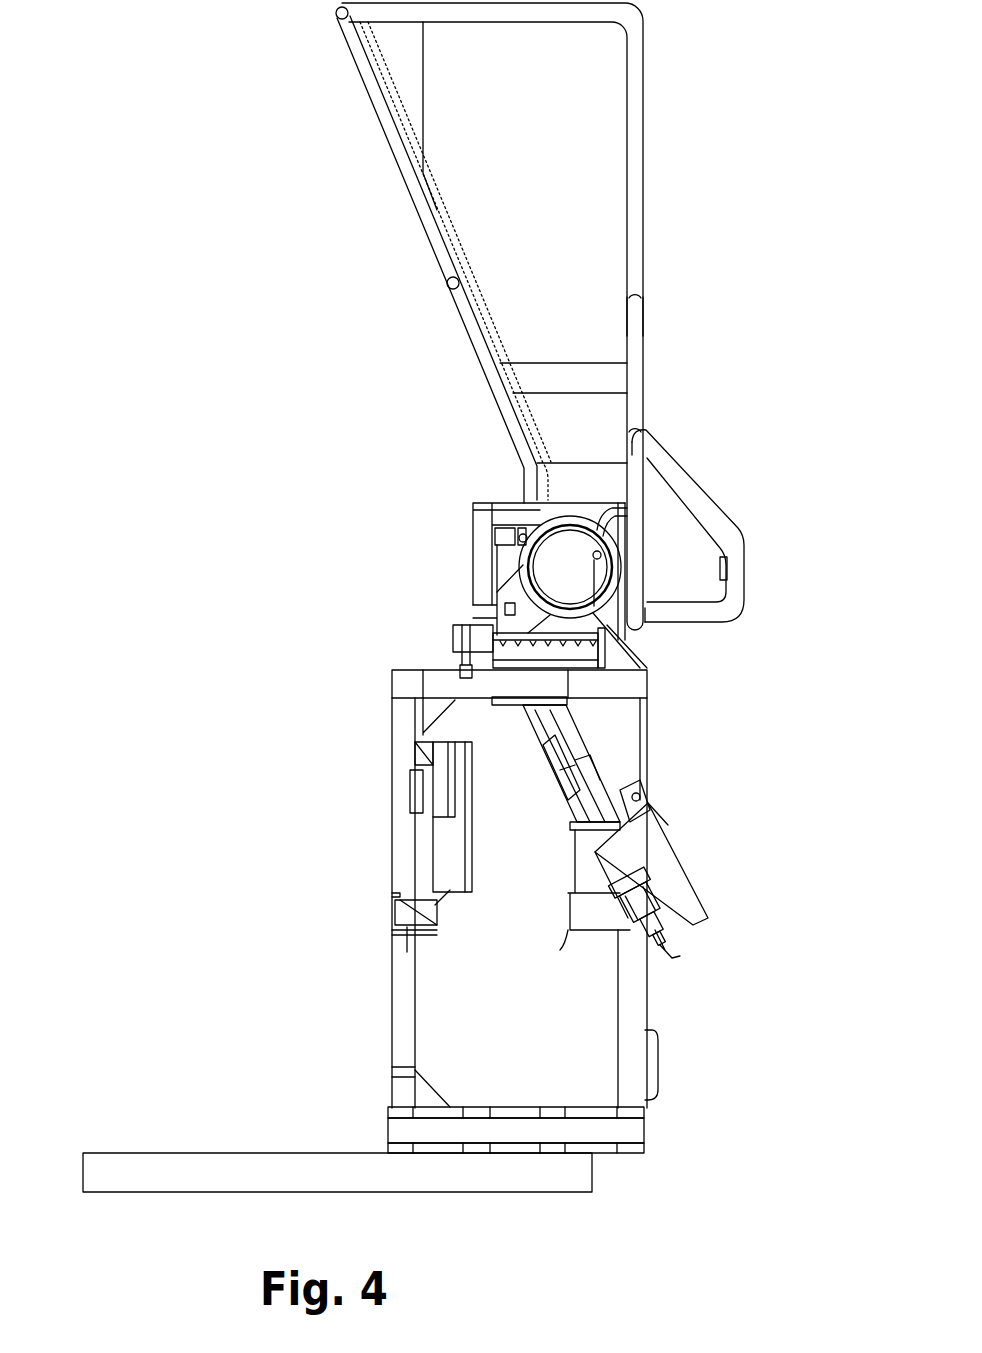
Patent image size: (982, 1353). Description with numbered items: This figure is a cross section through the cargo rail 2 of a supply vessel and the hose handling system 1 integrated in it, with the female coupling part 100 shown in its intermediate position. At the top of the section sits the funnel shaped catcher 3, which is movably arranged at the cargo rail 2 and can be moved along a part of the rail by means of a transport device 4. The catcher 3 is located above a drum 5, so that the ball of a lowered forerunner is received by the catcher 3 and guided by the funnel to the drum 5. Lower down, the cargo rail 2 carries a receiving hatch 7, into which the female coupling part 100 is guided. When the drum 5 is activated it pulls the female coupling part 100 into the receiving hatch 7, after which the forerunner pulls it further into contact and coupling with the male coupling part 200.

The hose handling system 1 is at (250, 529).
The cargo rail 2 is at (340, 989).
The funnel shaped catcher 3 is at (526, 198).
The transport device 4 is at (498, 567).
The drum 5 is at (570, 557).
The receiving hatch 7 is at (697, 822).
The female coupling part 100 is at (627, 858).
The male coupling part 200 is at (568, 753).